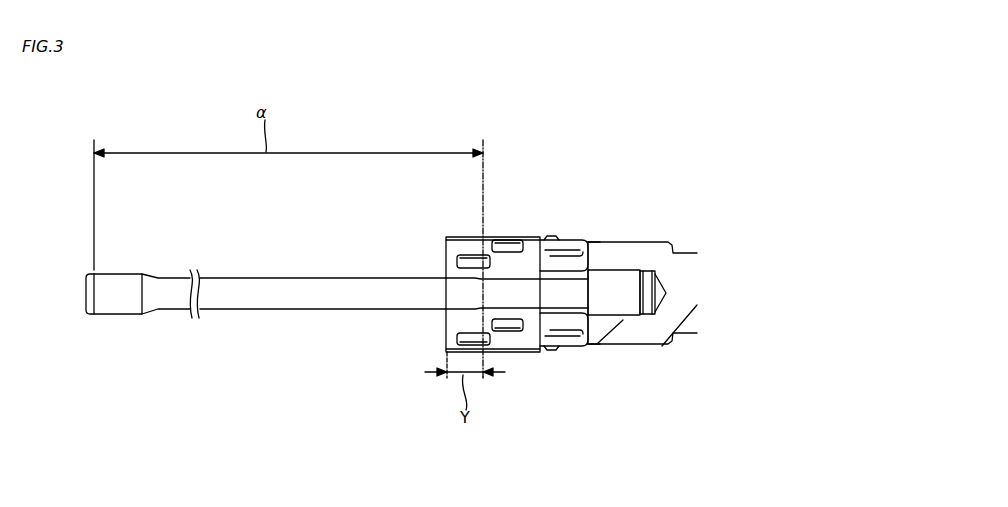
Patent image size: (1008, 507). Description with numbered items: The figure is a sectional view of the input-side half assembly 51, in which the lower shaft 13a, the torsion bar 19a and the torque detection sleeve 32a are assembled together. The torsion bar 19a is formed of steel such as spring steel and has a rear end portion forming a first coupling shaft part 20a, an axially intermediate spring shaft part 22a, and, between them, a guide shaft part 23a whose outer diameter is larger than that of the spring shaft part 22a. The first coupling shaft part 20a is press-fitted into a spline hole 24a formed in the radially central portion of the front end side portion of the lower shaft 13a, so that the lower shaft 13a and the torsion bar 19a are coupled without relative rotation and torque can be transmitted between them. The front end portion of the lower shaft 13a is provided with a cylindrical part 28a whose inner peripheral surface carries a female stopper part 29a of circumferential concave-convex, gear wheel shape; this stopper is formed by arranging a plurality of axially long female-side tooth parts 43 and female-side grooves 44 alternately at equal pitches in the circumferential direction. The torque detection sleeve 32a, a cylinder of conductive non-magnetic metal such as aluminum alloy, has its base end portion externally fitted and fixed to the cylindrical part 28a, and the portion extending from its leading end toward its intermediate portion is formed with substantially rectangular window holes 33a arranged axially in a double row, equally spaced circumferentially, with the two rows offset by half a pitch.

The lower shaft 13a is at (660, 345).
The torsion bar 19a is at (233, 287).
The first coupling shaft part 20a is at (628, 290).
The spring shaft part 22a is at (282, 297).
The guide shaft part 23a is at (513, 298).
The spline hole 24a is at (614, 316).
The cylindrical part 28a is at (575, 239).
The female stopper part 29a is at (543, 237).
The torque detection sleeve 32a is at (447, 236).
The window holes 33a is at (462, 260).
The female-side tooth parts 43 is at (560, 238).
The female-side grooves 44 is at (595, 243).
The input-side half assembly 51 is at (668, 241).